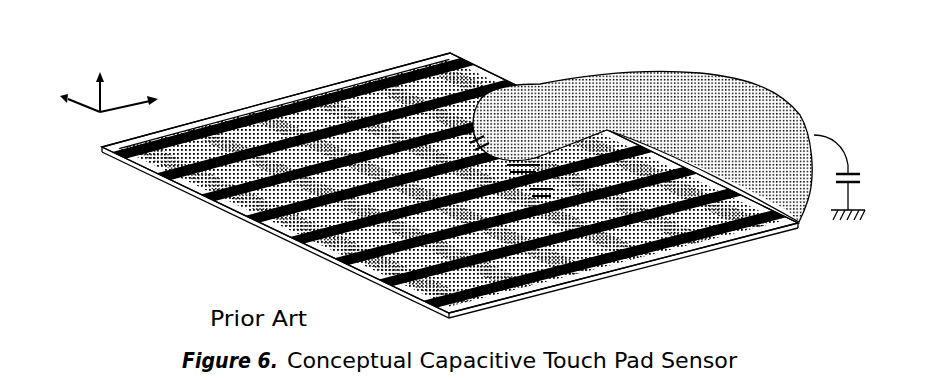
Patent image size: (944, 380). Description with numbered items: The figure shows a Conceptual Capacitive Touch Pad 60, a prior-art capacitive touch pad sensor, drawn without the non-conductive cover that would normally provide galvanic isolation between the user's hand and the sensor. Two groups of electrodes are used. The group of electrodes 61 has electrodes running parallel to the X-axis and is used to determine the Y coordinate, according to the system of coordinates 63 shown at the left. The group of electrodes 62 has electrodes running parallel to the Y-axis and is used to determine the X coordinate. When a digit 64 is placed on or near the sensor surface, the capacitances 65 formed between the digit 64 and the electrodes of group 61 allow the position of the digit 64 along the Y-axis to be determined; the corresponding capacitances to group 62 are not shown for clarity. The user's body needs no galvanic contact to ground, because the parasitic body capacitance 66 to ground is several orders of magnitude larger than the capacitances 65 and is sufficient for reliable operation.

The Conceptual Capacitive Touch Pad 60 is at (488, 78).
The group of electrodes 61 is at (330, 260).
The group of electrodes 62 is at (530, 295).
The system of coordinates 63 is at (100, 112).
The digit 64 is at (680, 103).
The capacitances 65 is at (513, 158).
The parasitic body capacitance 66 is at (857, 163).